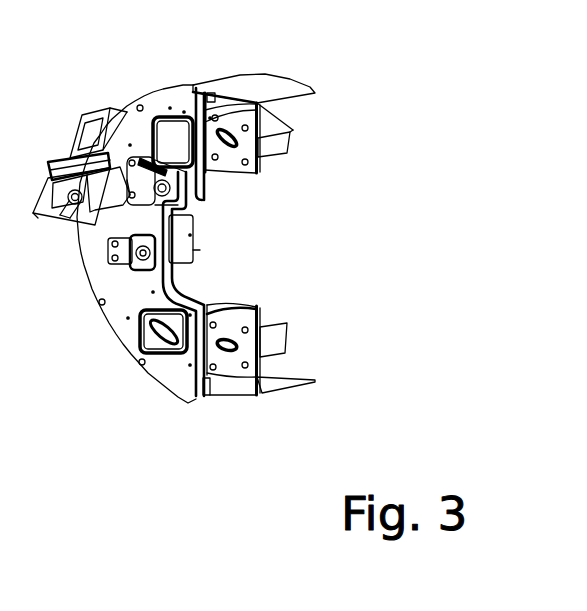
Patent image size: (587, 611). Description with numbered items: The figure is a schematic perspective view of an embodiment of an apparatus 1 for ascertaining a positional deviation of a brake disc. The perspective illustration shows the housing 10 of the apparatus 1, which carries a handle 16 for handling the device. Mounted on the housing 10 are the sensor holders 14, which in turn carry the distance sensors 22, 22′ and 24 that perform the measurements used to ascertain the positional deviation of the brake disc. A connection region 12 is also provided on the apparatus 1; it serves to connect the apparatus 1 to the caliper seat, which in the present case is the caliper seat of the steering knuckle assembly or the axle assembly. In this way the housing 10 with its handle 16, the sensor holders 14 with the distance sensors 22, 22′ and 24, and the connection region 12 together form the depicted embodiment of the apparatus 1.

The apparatus 1 is at (252, 55).
The housing 10 is at (160, 100).
The connection region 12 is at (108, 267).
The sensor holders 14 is at (293, 130).
The handle 16 is at (85, 115).
The distance sensor 22 is at (272, 148).
The distance sensor 22′ is at (282, 343).
The distance sensor 24 is at (64, 223).